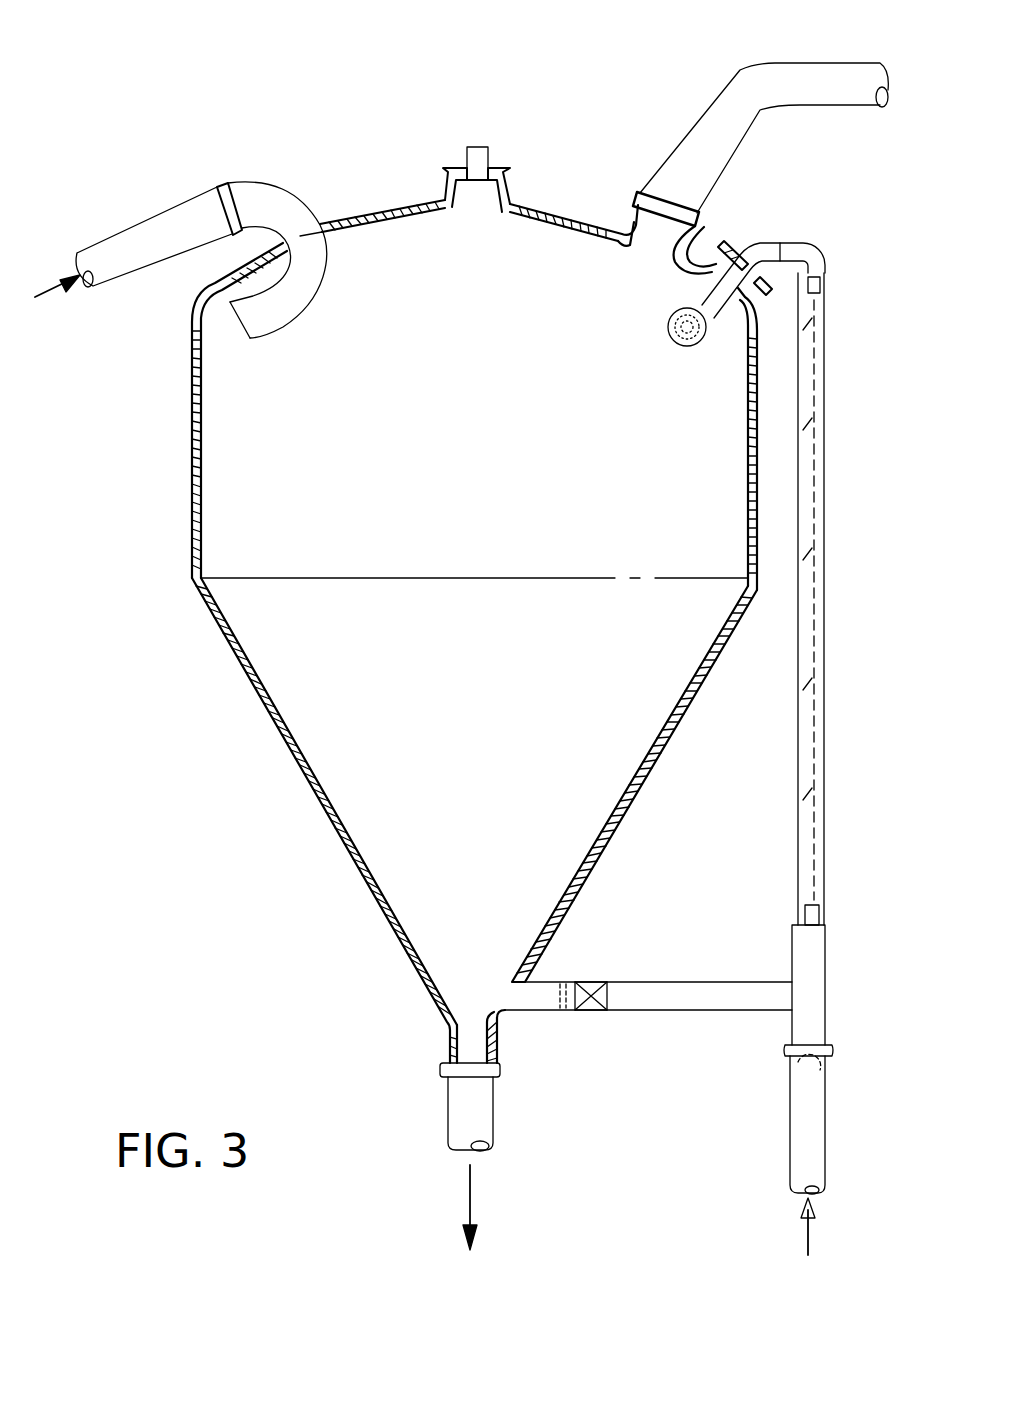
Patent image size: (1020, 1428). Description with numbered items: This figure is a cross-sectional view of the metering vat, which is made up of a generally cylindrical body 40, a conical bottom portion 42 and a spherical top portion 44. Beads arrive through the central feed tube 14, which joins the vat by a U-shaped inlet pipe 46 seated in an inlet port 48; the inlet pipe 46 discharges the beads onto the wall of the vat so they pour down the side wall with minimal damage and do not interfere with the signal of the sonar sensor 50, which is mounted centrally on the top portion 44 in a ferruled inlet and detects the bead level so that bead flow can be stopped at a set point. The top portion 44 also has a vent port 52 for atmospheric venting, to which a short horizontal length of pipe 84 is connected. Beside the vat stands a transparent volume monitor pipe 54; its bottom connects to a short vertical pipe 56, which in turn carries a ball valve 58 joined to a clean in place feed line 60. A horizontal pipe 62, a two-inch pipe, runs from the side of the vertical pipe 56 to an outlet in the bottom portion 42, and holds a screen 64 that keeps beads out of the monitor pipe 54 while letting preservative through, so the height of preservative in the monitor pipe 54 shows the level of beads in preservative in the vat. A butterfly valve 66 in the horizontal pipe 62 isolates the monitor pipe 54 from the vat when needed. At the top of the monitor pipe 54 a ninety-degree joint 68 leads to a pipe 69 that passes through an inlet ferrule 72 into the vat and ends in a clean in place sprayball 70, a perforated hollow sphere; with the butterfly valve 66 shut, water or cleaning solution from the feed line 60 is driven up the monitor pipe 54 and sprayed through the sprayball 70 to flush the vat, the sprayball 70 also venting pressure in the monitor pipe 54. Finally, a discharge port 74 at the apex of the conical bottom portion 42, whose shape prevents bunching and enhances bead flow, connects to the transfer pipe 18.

The central feed tube 14 is at (128, 232).
The transfer pipe 18 is at (493, 1118).
The cylindrical body 40 is at (192, 520).
The conical bottom portion 42 is at (305, 790).
The spherical top portion 44 is at (362, 198).
The U-shaped inlet pipe 46 is at (252, 183).
The inlet port 48 is at (322, 226).
The sonar sensor 50 is at (463, 150).
The vent port 52 is at (632, 220).
The transparent volume monitor pipe 54 is at (822, 688).
The short vertical pipe 56 is at (825, 997).
The ball valve 58 is at (828, 1075).
The clean in place feed line 60 is at (818, 1162).
The horizontal pipe 62 is at (726, 1010).
The screen 64 is at (560, 1010).
The butterfly valve 66 is at (596, 982).
The 90° joint 68 is at (825, 248).
The pipe 69 is at (766, 243).
The clean in place sprayball 70 is at (668, 324).
The inlet ferrule 72 is at (702, 265).
The discharge port 74 is at (450, 1045).
The short horizontal length of pipe 84 is at (774, 62).